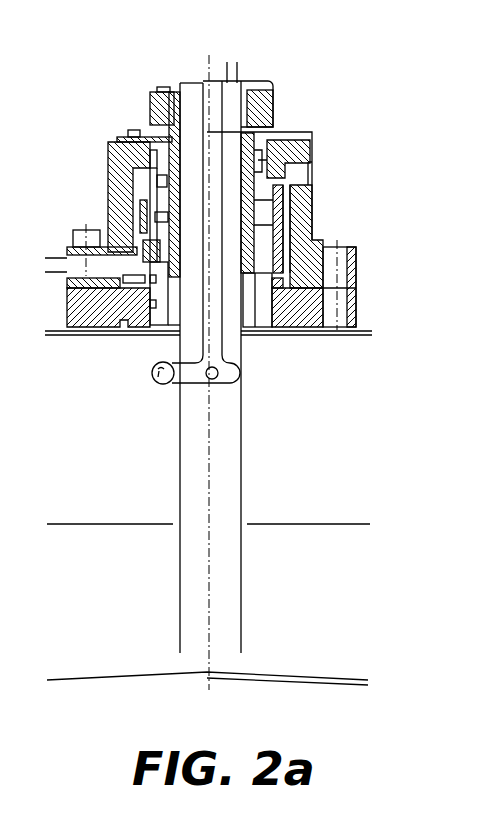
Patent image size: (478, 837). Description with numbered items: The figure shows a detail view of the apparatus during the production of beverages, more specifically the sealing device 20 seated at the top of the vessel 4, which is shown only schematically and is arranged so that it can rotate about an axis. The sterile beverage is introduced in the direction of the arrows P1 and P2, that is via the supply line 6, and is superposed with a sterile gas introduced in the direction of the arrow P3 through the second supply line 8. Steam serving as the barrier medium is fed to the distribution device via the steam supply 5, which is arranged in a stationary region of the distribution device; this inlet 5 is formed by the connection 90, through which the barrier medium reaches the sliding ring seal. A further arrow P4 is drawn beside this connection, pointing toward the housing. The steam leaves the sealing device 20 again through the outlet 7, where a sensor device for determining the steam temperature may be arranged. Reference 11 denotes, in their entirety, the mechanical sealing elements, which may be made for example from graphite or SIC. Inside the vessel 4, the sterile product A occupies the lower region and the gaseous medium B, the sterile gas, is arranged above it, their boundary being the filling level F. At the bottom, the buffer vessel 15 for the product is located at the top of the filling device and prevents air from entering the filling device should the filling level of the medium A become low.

The arrow P1 is at (192, 118).
The arrow P2 is at (232, 105).
The arrow P3 is at (215, 105).
The fourth pressure / flow path P4 is at (320, 175).
The vessel 4 is at (350, 404).
The steam supply 5 is at (320, 185).
The supply line 6 is at (230, 238).
The outlet 7 is at (126, 265).
The second supply line 8 is at (253, 132).
The mechanical sealing elements 11 is at (128, 194).
The buffer vessel 15 is at (80, 678).
The sealing device 20 is at (372, 250).
The connection 90 is at (286, 150).
The sterile product A is at (282, 601).
The gaseous medium B is at (275, 429).
The filling level F is at (208, 513).